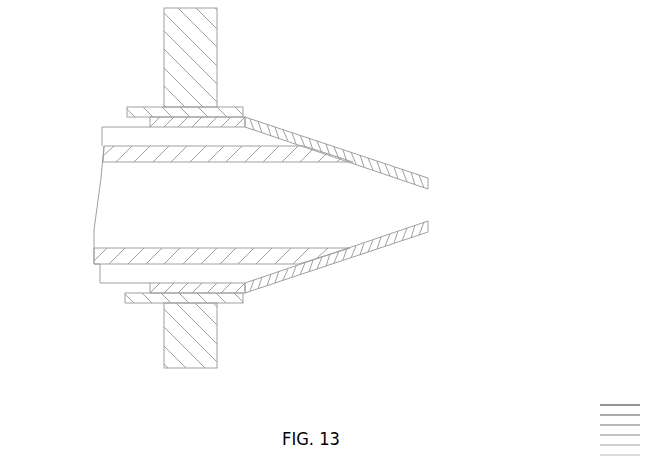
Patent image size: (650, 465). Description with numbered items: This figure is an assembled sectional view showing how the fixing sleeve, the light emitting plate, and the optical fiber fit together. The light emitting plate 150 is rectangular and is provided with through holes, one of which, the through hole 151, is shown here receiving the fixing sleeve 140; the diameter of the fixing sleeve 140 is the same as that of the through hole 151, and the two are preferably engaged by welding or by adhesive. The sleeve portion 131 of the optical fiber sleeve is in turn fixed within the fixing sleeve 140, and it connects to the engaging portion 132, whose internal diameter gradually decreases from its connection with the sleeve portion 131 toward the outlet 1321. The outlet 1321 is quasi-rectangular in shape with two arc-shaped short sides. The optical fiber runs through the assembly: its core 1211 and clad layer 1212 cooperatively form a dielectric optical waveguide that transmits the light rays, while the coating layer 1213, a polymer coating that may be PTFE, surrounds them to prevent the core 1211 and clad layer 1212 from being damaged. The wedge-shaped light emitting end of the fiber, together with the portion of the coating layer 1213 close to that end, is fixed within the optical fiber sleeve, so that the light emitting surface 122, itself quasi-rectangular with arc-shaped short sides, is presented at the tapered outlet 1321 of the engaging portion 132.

The light emitting surface 122 is at (430, 232).
The outlet 1321 is at (430, 204).
The sleeve portion 131 is at (235, 117).
The engaging portion 132 is at (340, 148).
The fixing sleeve 140 is at (243, 295).
The light emitting plate 150 is at (197, 350).
The through hole 151 is at (199, 299).
The core 1211 is at (135, 218).
The clad layer 1212 is at (100, 268).
The coating layer 1213 is at (128, 137).